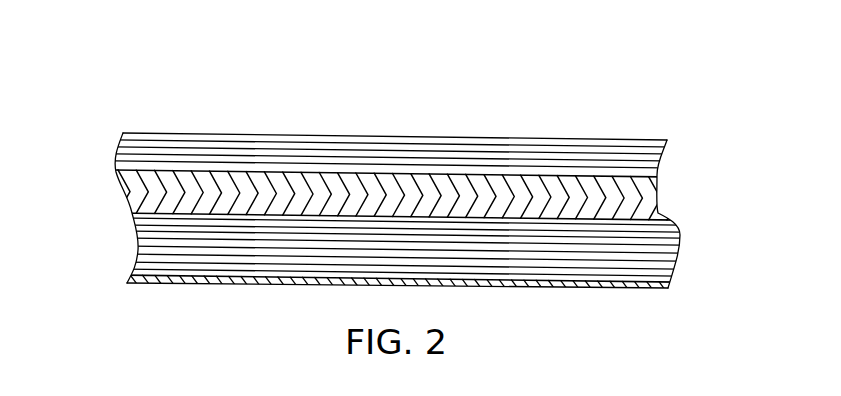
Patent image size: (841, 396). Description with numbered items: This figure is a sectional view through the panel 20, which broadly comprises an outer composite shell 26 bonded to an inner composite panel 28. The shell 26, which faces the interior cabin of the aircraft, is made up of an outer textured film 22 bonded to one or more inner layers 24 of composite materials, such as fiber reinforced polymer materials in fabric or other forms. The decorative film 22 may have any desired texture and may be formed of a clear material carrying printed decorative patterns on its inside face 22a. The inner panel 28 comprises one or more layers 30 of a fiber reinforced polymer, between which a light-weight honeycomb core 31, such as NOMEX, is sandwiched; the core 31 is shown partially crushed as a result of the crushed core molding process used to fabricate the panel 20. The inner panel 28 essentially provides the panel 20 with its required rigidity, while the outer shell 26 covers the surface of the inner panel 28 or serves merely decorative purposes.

The panel 20 is at (652, 110).
The outer textured film 22 is at (579, 285).
The inside face 22a is at (172, 266).
The inner layers 24 is at (311, 265).
The outer composite shell 26 is at (378, 289).
The inner composite panel 28 is at (415, 153).
The layers 30 is at (248, 233).
The honeycomb core 31 is at (450, 195).